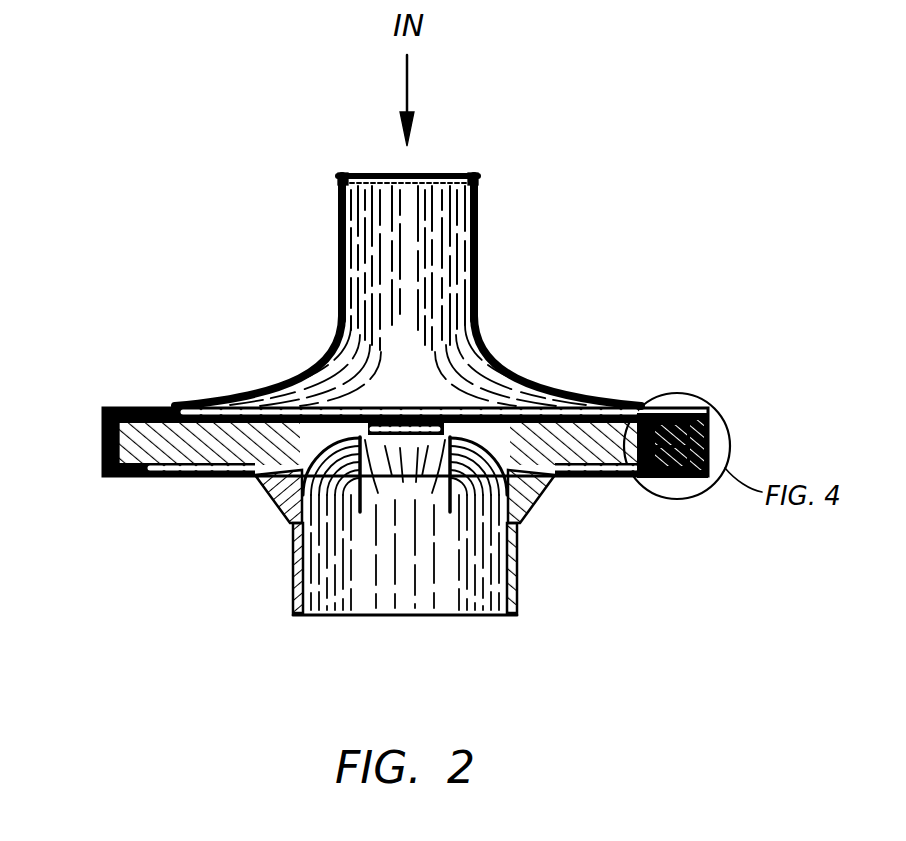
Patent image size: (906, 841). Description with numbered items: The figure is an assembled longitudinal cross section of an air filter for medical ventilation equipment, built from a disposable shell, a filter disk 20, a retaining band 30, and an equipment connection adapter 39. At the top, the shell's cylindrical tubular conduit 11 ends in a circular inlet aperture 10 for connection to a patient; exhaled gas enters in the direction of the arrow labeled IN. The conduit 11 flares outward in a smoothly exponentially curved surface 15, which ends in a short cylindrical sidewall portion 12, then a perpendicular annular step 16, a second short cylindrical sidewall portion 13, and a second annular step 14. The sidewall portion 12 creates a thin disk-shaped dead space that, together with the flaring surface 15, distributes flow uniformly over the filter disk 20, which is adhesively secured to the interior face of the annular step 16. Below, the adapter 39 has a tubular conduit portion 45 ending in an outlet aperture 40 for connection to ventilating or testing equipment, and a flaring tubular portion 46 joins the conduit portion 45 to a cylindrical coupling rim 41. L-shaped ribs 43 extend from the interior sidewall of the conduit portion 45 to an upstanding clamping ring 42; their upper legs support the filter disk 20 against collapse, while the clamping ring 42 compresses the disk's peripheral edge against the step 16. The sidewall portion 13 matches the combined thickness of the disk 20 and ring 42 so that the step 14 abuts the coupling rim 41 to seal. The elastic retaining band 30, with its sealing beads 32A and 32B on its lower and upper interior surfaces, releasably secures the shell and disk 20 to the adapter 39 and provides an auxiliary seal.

The inlet aperture 10 is at (447, 175).
The tubular conduit 11 is at (336, 277).
The cylindrical sidewall portion 12 is at (172, 407).
The second cylindrical sidewall portion 13 is at (128, 409).
The second annular step 14 is at (103, 420).
The exponentially curved surface 15 is at (492, 354).
The annular step 16 is at (125, 405).
The filter disk 20 is at (648, 410).
The retaining band 30 is at (710, 440).
The sealing bead 32A is at (686, 500).
The sealing bead 32B is at (676, 414).
The equipment connection adapter 39 is at (517, 578).
The outlet aperture 40 is at (480, 617).
The coupling rim 41 is at (103, 455).
The clamping ring 42 is at (643, 478).
The L-shaped ribs 43 is at (322, 440).
The conduit portion 45 is at (293, 578).
The flaring tubular portion 46 is at (522, 520).